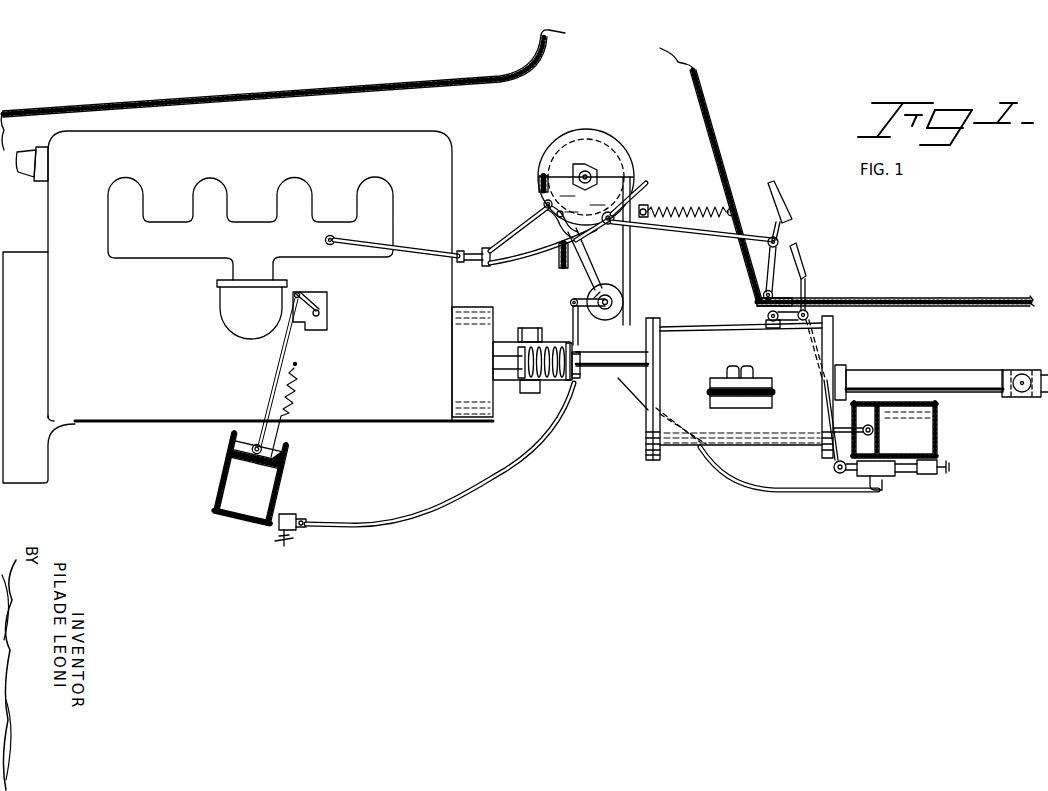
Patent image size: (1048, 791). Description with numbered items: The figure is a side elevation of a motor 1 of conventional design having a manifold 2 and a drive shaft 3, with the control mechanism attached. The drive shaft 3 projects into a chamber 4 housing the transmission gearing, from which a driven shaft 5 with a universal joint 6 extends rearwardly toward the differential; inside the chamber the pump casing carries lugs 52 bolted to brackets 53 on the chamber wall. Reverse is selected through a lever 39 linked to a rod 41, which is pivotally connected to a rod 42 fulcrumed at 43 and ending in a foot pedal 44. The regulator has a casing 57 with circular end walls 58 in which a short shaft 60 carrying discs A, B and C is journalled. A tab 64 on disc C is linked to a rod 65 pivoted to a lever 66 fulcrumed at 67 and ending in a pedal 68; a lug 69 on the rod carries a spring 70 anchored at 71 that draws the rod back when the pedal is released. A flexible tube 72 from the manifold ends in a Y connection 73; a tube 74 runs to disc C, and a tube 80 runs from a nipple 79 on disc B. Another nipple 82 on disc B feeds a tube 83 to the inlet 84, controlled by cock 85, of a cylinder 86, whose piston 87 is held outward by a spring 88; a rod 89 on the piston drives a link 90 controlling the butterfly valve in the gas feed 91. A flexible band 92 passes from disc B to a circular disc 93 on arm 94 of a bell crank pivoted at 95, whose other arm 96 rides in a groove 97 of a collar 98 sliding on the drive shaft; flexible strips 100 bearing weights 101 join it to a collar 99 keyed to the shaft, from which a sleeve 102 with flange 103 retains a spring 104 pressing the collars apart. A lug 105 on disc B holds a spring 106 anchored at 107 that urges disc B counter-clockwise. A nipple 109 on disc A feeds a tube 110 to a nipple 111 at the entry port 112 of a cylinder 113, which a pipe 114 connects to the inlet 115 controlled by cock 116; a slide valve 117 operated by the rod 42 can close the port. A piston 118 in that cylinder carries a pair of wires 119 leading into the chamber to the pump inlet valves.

The motor 1 is at (248, 307).
The manifold 2 is at (242, 230).
The drive shaft 3 is at (612, 372).
The chamber 4 is at (697, 333).
The driven shaft 5 is at (925, 372).
The universal joint 6 is at (1014, 371).
The lever 39 is at (768, 322).
The rod 41 is at (794, 321).
The rod 42 is at (809, 319).
The fulcrum 43 is at (843, 366).
The foot pedal 44 is at (807, 272).
The lugs 52 is at (718, 378).
The brackets 53 is at (773, 392).
The casing 57 is at (605, 132).
The circular end walls 58 is at (586, 177).
The short shaft 60 is at (575, 176).
The tab 64 is at (643, 187).
The rod 65 is at (692, 236).
The lever 66 is at (780, 240).
The fulcrum 67 is at (762, 295).
The pedal 68 is at (784, 197).
The lug 69 is at (647, 207).
The spring 70 is at (688, 203).
The anchor 71 is at (734, 208).
The flexible tube 72 is at (399, 259).
The Y connection 73 is at (472, 253).
The tube 74 is at (508, 265).
The nipple 79 is at (543, 204).
The tube 80 is at (526, 231).
The nipple 82 is at (592, 236).
The tube 83 is at (540, 443).
The inlet 84 is at (298, 518).
The cock 85 is at (284, 548).
The cylinder 86 is at (228, 490).
The piston 87 is at (296, 446).
The spring 88 is at (298, 392).
The rod 89 is at (284, 348).
The link 90 is at (308, 296).
The gas feed 91 is at (328, 301).
The flexible band 92 is at (631, 252).
The circular disc 93 is at (624, 302).
The arm 94 is at (594, 298).
The pivot 95 is at (570, 303).
The arm 96 is at (572, 321).
The groove 97 is at (576, 380).
The collar 98 is at (580, 375).
The collar 99 is at (492, 371).
The flexible strips 100 is at (507, 341).
The weight 101 is at (568, 415).
The sleeve 102 is at (506, 369).
The flange 103 is at (520, 379).
The spring 104 is at (568, 350).
The lug 105 is at (538, 181).
The spring 106 is at (554, 232).
The anchor 107 is at (556, 262).
The nipple 109 is at (585, 243).
The tube 110 is at (748, 477).
The nipple 111 is at (883, 486).
The entry port 112 is at (870, 477).
The cylinder 113 is at (938, 421).
The pipe 114 is at (907, 474).
The inlet 115 is at (938, 470).
The cock 116 is at (950, 466).
The slide valve 117 is at (833, 468).
The piston 118 is at (875, 433).
The wires 119 is at (845, 428).